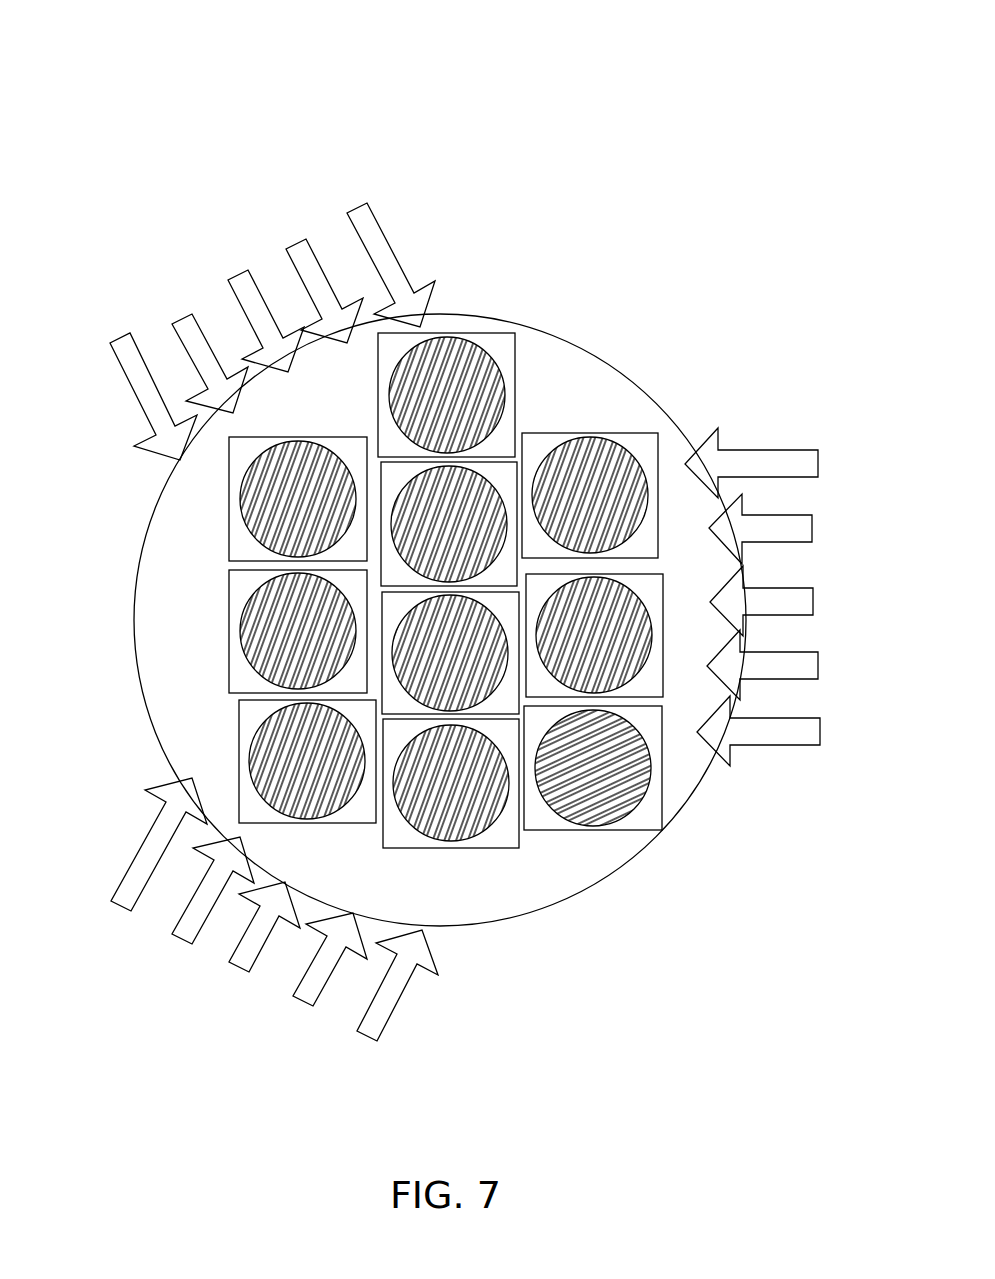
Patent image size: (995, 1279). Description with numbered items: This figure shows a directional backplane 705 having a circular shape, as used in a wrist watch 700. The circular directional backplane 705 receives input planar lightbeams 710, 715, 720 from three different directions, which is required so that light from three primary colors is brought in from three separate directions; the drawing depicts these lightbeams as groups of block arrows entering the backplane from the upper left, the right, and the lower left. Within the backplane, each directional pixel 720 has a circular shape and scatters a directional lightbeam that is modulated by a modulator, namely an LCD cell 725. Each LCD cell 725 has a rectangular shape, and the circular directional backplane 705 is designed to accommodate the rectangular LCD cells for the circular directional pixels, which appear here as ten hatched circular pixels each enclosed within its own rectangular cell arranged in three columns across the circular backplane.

The wrist watch 700 is at (449, 66).
The directional backplane 705 is at (555, 403).
The input planar lightbeam 710 is at (377, 243).
The input planar lightbeam 715 is at (772, 448).
The directional pixel 720 is at (420, 408).
The LCD cell 725 is at (503, 350).